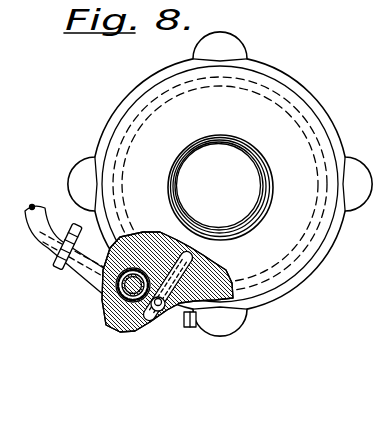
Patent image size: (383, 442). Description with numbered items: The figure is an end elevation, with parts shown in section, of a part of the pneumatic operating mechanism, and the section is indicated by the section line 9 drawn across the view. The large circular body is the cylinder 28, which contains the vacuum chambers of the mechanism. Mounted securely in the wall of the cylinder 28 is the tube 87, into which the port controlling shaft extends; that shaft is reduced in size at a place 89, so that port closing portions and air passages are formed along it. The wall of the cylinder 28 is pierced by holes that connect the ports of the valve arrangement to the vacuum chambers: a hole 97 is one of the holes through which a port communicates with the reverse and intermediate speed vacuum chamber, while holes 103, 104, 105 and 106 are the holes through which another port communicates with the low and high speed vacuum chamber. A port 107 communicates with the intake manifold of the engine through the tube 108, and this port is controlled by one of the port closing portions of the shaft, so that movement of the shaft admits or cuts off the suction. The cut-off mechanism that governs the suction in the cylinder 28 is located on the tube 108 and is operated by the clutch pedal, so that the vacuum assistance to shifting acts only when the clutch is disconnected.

The section line 9- 9 is at (8, 228).
The cylinder 28 is at (298, 239).
The tube 87 is at (108, 298).
The reduced portion of shaft 89 is at (127, 315).
The hole 97 is at (108, 312).
The hole 103 is at (163, 318).
The hole 104 is at (146, 308).
The hole 105 is at (175, 313).
The hole 106 is at (212, 255).
The port 107 is at (128, 318).
The tube 108 is at (40, 214).